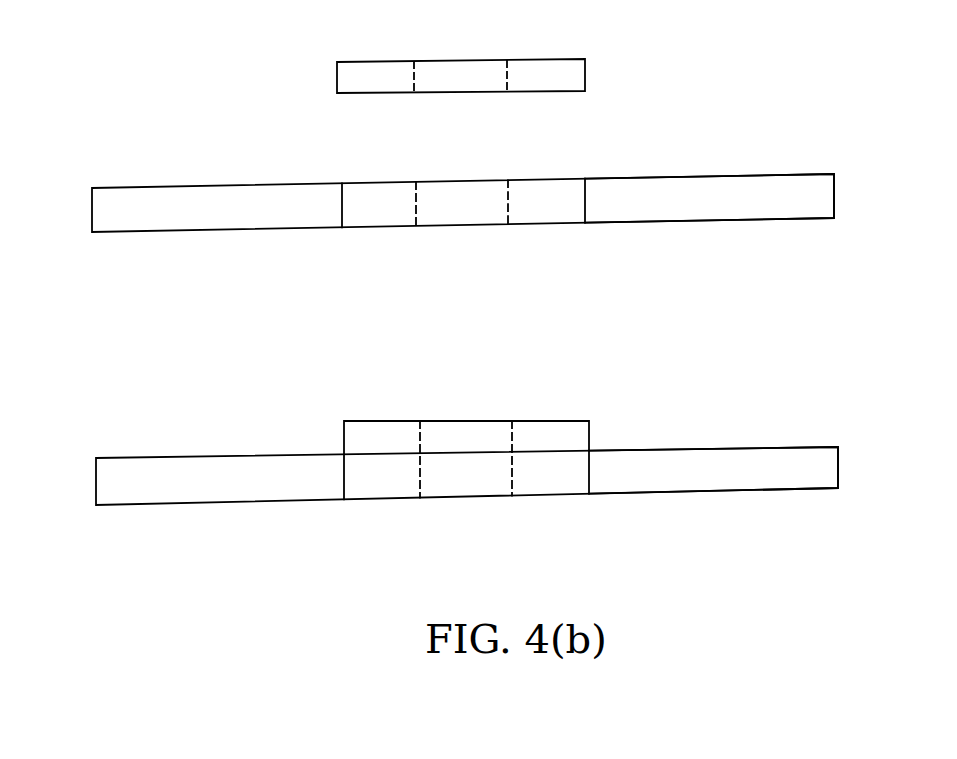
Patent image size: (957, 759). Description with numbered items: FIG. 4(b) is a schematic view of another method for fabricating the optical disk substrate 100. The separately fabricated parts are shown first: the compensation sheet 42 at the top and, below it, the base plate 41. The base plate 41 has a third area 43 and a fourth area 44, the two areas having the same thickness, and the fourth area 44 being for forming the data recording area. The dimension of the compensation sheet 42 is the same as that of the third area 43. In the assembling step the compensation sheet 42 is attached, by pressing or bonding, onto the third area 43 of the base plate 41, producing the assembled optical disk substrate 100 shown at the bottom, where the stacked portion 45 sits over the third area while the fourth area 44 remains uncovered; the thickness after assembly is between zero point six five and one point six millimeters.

The base plate 41 is at (98, 146).
The compensation sheet 42 is at (307, 49).
The third area 43 is at (549, 190).
The fourth area 44 is at (721, 187).
The stacked bending portion 45 is at (552, 432).
The optical disk substrate 100 is at (119, 386).